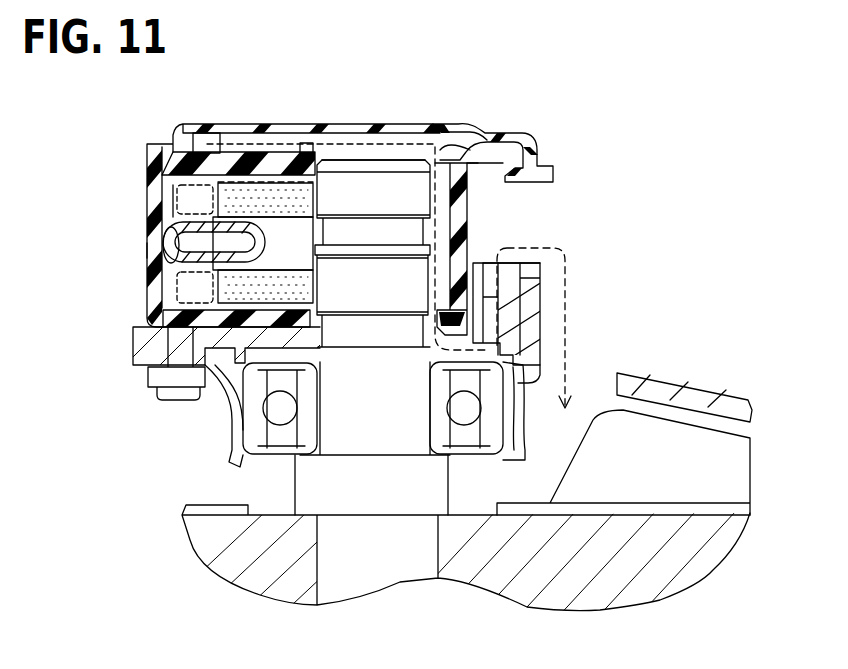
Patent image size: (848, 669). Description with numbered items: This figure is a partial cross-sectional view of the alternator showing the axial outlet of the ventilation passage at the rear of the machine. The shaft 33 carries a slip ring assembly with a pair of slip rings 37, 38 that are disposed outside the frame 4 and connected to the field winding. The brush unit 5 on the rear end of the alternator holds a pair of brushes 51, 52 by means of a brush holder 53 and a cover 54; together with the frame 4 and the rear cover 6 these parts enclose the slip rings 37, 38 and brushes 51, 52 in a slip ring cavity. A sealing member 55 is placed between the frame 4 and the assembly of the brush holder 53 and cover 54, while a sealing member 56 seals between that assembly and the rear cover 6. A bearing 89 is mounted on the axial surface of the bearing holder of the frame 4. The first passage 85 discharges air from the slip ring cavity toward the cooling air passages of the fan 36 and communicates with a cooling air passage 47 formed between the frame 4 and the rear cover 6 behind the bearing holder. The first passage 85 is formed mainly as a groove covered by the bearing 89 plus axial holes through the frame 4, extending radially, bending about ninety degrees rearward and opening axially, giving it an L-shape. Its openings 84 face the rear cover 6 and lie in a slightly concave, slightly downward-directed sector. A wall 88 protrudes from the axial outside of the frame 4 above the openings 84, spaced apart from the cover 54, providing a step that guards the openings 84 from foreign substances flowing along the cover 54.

The frame 4 is at (660, 385).
The brush unit 5 is at (140, 255).
The rear cover 6 is at (305, 275).
The shaft 33 is at (403, 567).
The fan 36 is at (670, 443).
The slip ring 37 is at (473, 230).
The slip ring 38 is at (397, 270).
The cooling air passage 47 is at (575, 256).
The brush 51 is at (363, 188).
The brush 52 is at (245, 190).
The brush holder 53 is at (165, 280).
The cover 54 is at (455, 200).
The sealing member 55 is at (182, 322).
The sealing member 56 is at (150, 158).
The openings 84 is at (510, 262).
The first passage 85 is at (450, 345).
The wall 88 is at (488, 265).
The bearing 89 is at (255, 438).